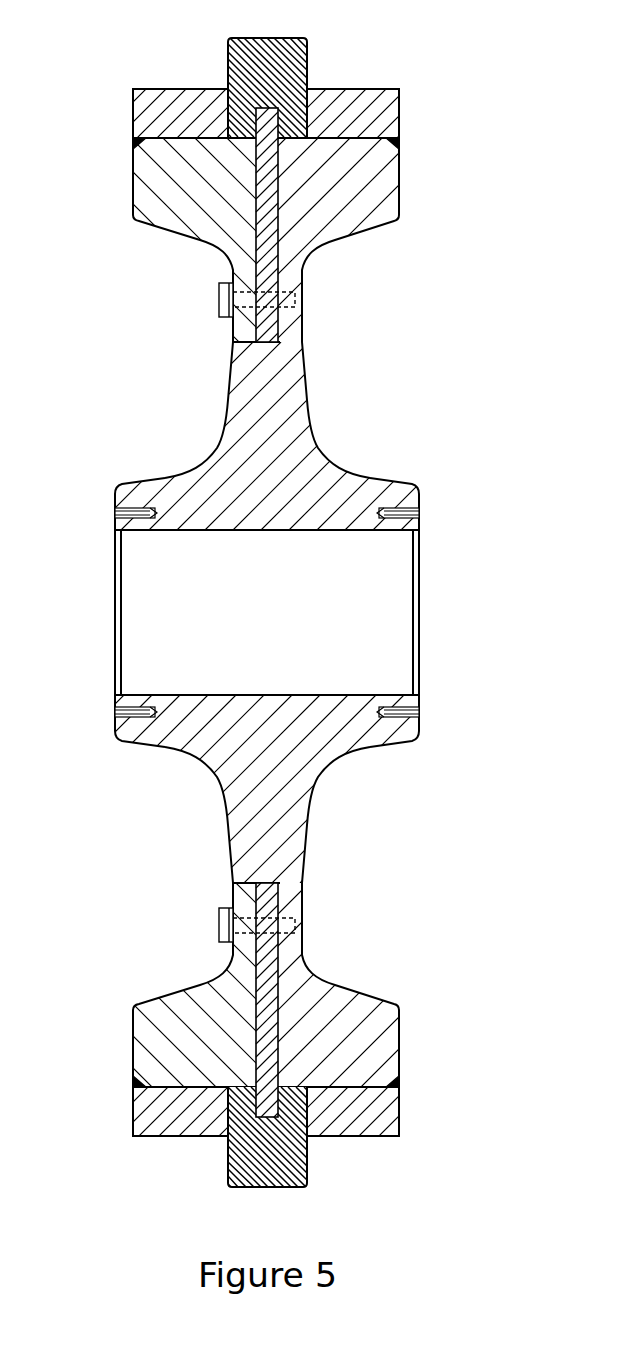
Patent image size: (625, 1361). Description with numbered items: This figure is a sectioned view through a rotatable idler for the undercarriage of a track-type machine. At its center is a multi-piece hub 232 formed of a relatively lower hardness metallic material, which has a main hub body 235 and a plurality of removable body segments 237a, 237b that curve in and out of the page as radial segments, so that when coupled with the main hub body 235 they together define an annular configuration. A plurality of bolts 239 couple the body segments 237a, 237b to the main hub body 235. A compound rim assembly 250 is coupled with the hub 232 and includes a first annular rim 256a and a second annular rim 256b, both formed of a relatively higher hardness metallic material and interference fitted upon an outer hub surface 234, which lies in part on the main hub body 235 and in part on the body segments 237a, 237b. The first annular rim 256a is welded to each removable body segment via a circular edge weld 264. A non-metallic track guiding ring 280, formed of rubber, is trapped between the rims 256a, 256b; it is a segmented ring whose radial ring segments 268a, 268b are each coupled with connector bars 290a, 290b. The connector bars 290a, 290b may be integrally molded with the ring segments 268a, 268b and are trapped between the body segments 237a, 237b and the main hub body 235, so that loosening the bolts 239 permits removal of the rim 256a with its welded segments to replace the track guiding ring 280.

The hub 232 is at (375, 492).
The outer hub surface 234 is at (335, 1087).
The main hub body 235 is at (297, 357).
The removable body segment 237a is at (150, 190).
The removable body segment 237b is at (152, 1022).
The bolt 239 is at (219, 296).
The compound rim assembly 250 is at (133, 100).
The first annular rim 256a is at (150, 1124).
The second annular rim 256b is at (395, 1122).
The circular edge weld 264 is at (133, 140).
The radial ring segment 268a is at (298, 56).
The radial ring segment 268b is at (242, 1157).
The track guiding ring 280 is at (307, 38).
The connector bar 290a is at (272, 184).
The connector bar 290b is at (272, 1034).